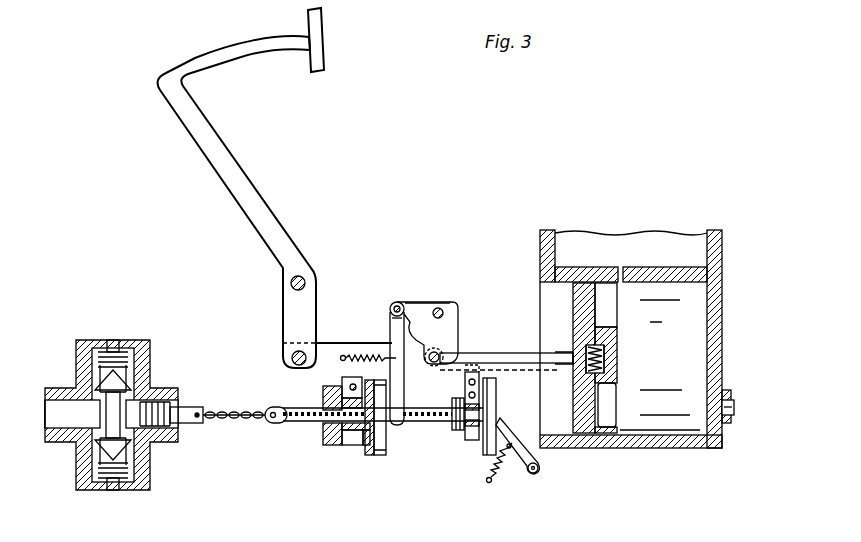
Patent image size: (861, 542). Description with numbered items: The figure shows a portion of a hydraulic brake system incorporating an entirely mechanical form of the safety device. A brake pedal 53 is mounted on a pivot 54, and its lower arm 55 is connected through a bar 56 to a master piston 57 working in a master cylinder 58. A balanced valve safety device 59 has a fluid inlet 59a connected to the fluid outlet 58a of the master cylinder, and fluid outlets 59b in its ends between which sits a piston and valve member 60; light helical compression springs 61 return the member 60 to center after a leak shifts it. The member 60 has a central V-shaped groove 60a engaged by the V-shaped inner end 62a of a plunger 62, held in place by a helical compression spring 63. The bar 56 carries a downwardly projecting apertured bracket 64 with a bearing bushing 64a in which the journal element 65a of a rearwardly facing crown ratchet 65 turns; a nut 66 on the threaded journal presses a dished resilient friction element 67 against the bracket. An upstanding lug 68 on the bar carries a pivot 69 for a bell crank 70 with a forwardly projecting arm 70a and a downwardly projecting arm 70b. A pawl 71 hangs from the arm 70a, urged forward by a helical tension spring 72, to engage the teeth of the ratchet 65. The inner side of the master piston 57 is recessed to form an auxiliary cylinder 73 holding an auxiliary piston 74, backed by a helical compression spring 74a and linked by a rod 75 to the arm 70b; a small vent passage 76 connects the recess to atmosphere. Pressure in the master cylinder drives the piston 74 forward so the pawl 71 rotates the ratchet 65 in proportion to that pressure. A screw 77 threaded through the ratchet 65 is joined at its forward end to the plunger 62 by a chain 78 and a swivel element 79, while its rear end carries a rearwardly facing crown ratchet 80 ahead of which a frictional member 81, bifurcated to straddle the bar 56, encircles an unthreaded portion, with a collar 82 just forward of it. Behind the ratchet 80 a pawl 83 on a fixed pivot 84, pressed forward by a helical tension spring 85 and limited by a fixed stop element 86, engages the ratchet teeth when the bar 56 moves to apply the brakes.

The brake pedal 53 is at (233, 153).
The pivot 54 is at (306, 284).
The lower arm 55 is at (284, 318).
The bar 56 is at (330, 342).
The master piston 57 is at (574, 305).
The master cylinder 58 is at (665, 437).
The fluid outlet 58a is at (740, 413).
The balanced valve safety device 59 is at (78, 355).
The fluid inlet 59a is at (50, 404).
The fluid outlets 59b is at (118, 346).
The piston and valve member 60 is at (100, 437).
The V-shaped groove 60a is at (72, 414).
The helical compression springs 61 is at (108, 348).
The plunger 62 is at (184, 421).
The V-shaped inner end 62a is at (150, 402).
The helical compression spring 63 is at (160, 428).
The apertured bracket 64 is at (345, 447).
The bearing bushing 64a is at (366, 447).
The crown ratchet 65 is at (386, 436).
The journal element 65a is at (335, 428).
The nut 66 is at (324, 395).
The resilient friction element 67 is at (338, 438).
The upstanding lug 68 is at (448, 305).
The pivot 69 is at (438, 308).
The bell crank 70 is at (445, 318).
The forwardly projecting arm 70a is at (404, 305).
The downwardly projecting arm 70b is at (440, 334).
The pawl 71 is at (396, 332).
The helical tension spring 72 is at (370, 356).
The auxiliary cylinder 73 is at (612, 348).
The auxiliary piston 74 is at (600, 358).
The helical compression spring 74a is at (598, 366).
The rod 75 is at (526, 362).
The vent passage 76 is at (578, 352).
The screw 77 is at (430, 412).
The chain 78 is at (236, 419).
The swivel element 79 is at (212, 413).
The crown ratchet 80 is at (496, 400).
The frictional member 81 is at (470, 438).
The collar 82 is at (455, 404).
The pawl 83 is at (508, 438).
The fixed pivot 84 is at (538, 471).
The helical tension spring 85 is at (508, 470).
The fixed stop element 86 is at (498, 456).